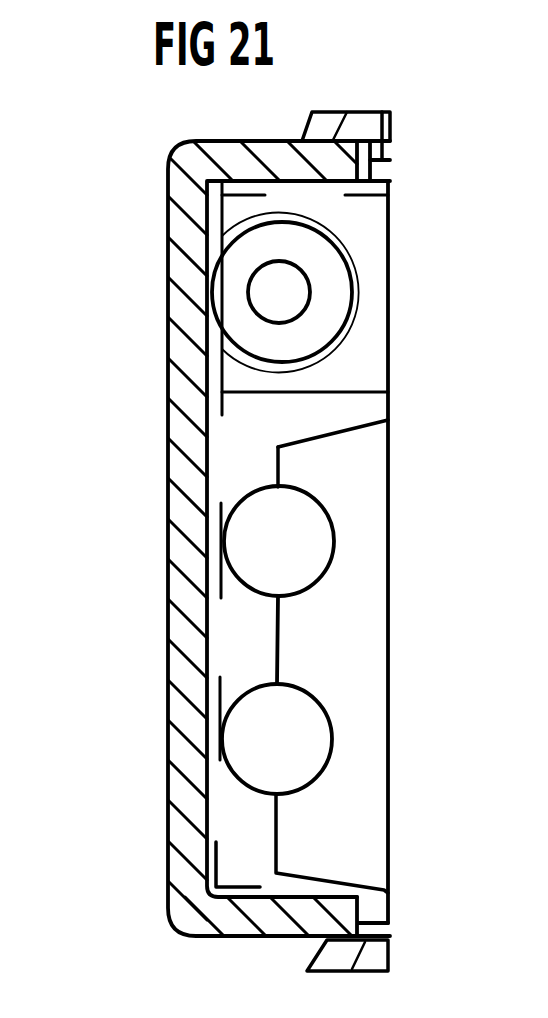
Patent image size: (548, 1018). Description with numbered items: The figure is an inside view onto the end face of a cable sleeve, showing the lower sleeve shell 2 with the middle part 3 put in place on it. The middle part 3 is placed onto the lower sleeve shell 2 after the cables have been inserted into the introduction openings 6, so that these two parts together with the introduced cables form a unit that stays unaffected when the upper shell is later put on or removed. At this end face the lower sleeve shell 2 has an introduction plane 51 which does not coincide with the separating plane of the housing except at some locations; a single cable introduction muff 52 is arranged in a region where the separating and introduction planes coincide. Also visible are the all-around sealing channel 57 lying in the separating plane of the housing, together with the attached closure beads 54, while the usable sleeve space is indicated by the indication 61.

The lower sleeve shell 2 is at (192, 633).
The middle part 3 is at (313, 463).
The introduction openings 6 is at (300, 574).
The introduction plane 51 is at (273, 838).
The cable introduction muff 52 is at (236, 285).
The closure beads 54 is at (366, 120).
The sealing channel 57 is at (384, 110).
The usable sleeve space 61 is at (240, 887).